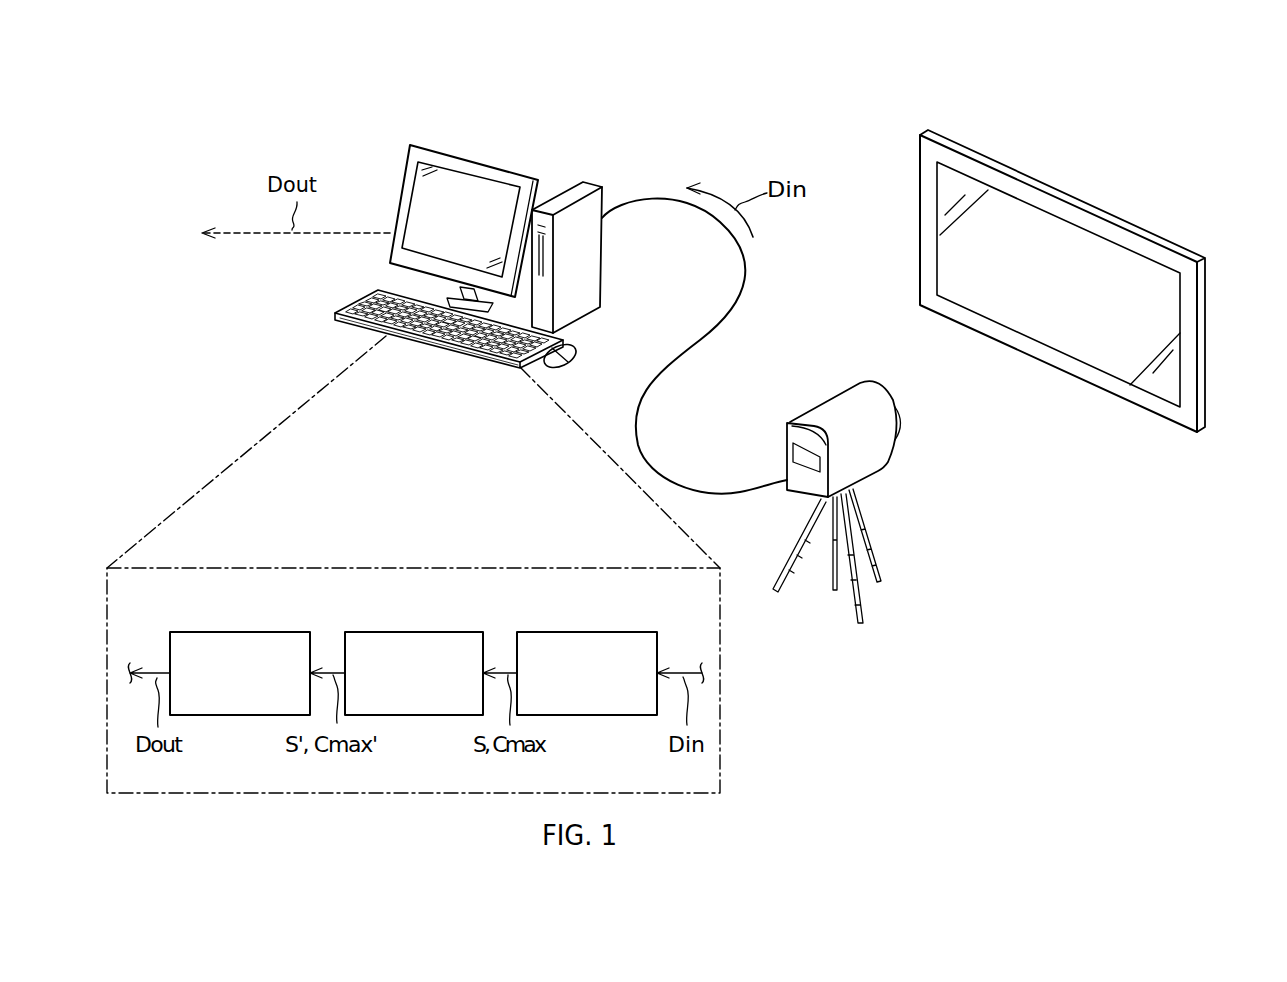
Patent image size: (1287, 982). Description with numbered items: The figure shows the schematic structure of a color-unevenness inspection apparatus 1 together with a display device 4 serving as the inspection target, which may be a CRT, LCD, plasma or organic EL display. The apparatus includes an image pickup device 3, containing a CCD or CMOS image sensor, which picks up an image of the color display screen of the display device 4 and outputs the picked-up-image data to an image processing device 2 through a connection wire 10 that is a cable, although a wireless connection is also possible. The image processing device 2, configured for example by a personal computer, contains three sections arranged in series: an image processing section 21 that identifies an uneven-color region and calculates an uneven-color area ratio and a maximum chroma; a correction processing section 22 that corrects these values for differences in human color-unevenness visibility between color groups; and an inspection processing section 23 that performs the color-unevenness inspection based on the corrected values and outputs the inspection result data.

The color-unevenness inspection apparatus 1 is at (570, 68).
The image processing device 2 is at (448, 115).
The image pickup device 3 is at (927, 548).
The display device 4 is at (1065, 190).
The connection wire 10 is at (667, 470).
The image processing section 21 is at (588, 630).
The correction processing section 22 is at (418, 630).
The inspection processing section 23 is at (243, 630).